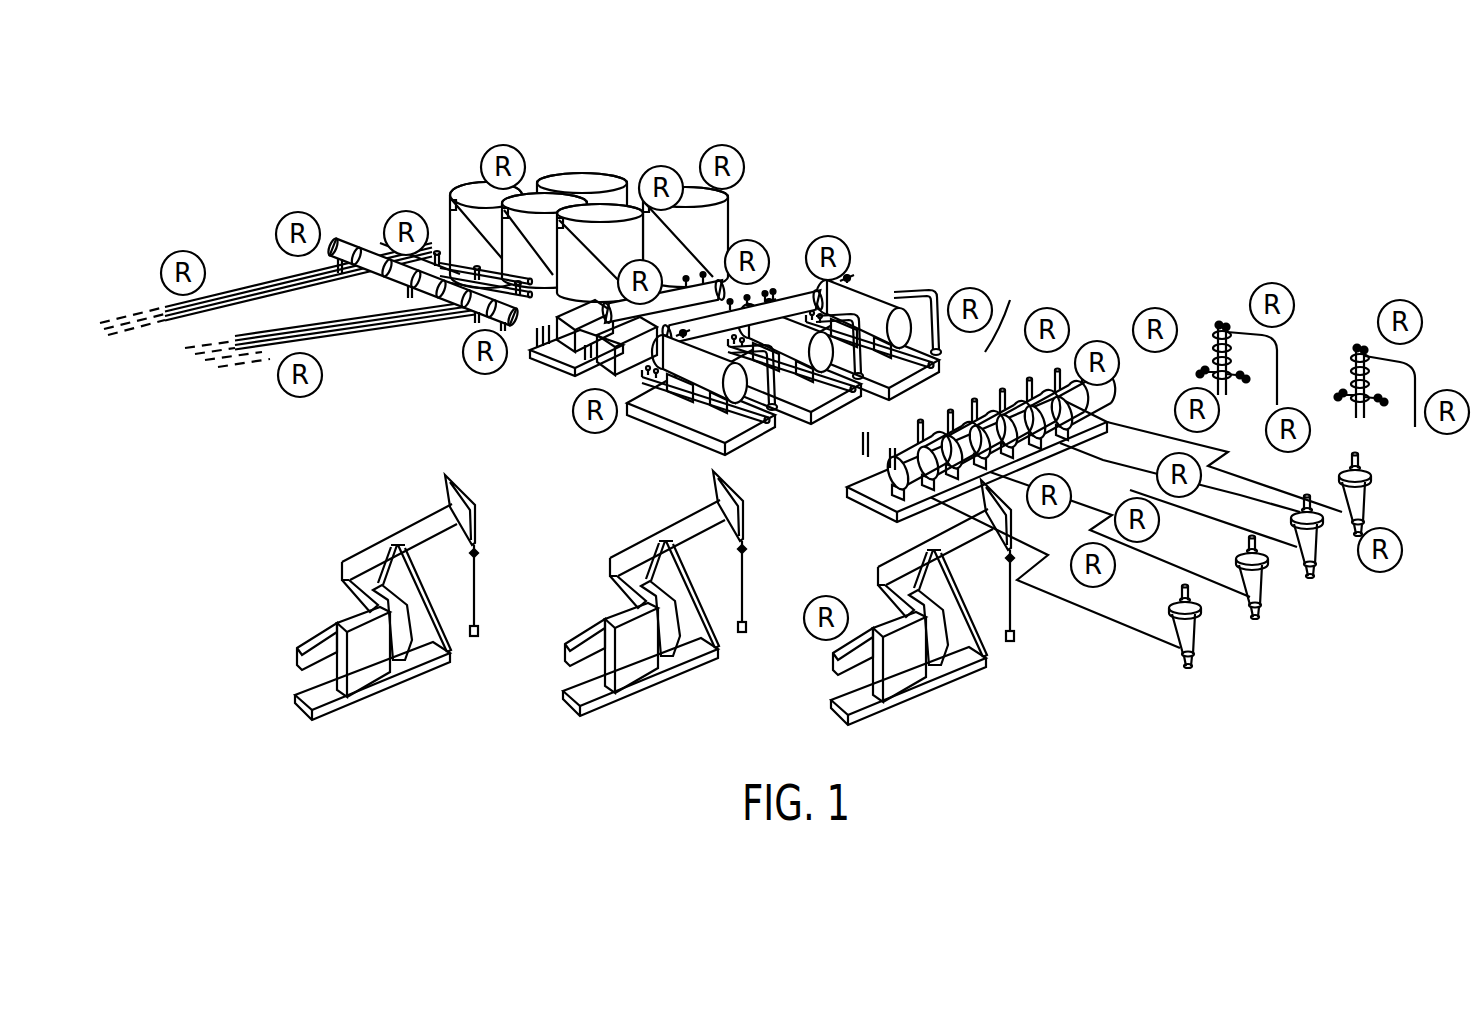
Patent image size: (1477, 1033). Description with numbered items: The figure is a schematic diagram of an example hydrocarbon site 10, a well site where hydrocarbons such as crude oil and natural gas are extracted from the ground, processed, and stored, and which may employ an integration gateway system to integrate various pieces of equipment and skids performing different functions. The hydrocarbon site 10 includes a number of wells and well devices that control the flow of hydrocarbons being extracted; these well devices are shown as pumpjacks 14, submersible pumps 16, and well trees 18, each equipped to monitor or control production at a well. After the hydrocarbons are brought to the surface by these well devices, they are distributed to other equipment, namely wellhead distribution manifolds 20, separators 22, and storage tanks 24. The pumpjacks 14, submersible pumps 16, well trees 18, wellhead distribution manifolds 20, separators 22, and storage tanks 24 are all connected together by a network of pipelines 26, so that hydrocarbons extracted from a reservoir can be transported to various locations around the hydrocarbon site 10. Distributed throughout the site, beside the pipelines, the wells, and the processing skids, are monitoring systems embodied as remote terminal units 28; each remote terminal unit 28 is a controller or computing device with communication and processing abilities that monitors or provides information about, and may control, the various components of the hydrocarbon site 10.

The hydrocarbon site 10 is at (183, 129).
The pumpjacks 14 is at (397, 528).
The submersible pumps 16 is at (1367, 510).
The well trees 18 is at (1218, 342).
The wellhead distribution manifolds 20 is at (870, 497).
The separators 22 is at (878, 298).
The storage tanks 24 is at (580, 173).
The network of pipelines 26 is at (268, 292).
The remote terminal unit 28 is at (178, 252).